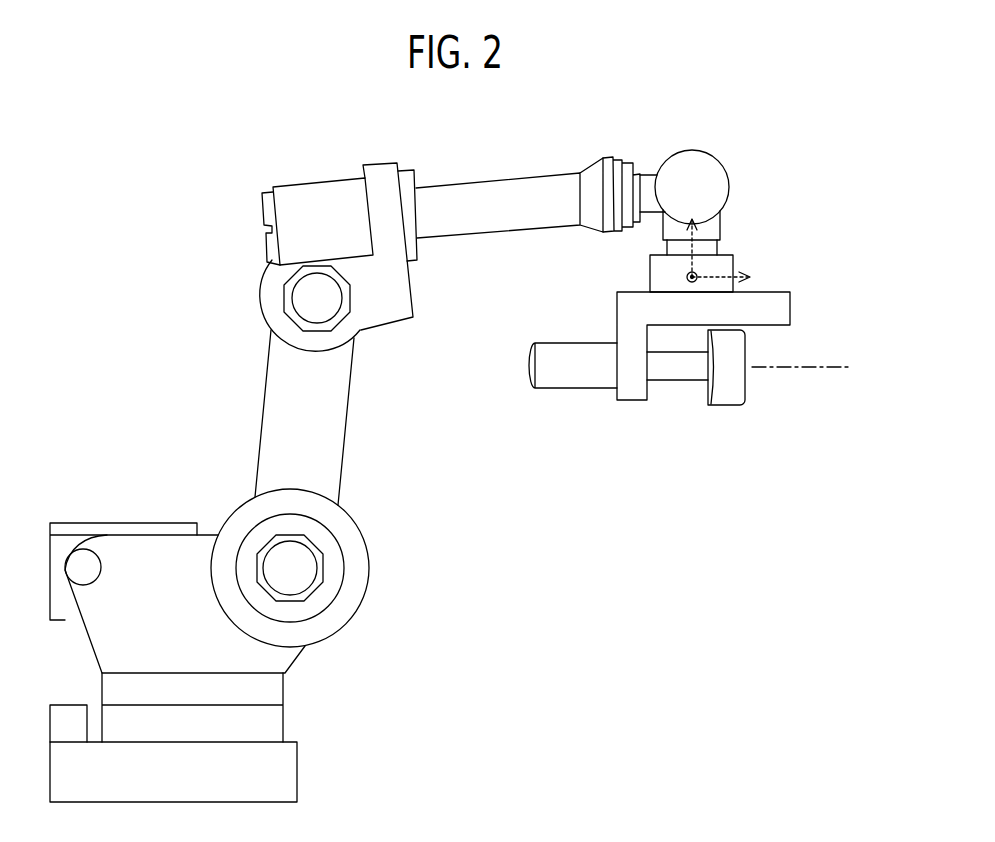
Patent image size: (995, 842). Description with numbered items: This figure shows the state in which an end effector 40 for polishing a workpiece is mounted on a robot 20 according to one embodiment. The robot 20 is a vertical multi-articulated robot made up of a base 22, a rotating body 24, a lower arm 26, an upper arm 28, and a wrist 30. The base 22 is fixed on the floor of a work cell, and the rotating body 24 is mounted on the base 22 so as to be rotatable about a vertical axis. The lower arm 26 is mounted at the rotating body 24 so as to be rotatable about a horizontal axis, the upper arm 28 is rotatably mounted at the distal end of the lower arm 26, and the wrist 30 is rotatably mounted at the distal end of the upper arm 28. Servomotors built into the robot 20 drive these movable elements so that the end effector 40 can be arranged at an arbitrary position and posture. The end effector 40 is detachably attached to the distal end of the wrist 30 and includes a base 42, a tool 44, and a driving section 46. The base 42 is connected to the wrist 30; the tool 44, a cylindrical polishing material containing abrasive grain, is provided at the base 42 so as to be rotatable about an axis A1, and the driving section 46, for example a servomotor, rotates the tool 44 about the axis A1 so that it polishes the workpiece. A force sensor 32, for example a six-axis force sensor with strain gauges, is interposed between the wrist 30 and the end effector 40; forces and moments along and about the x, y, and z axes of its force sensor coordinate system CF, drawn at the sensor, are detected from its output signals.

The robot 20 is at (182, 163).
The base 22 is at (297, 767).
The rotating body 24 is at (164, 617).
The lower arm 26 is at (320, 427).
The upper arm 28 is at (498, 190).
The wrist 30 is at (722, 226).
The force sensor 32 is at (733, 263).
The end effector 40 is at (657, 438).
The base 42 is at (702, 321).
The tool 44 is at (725, 393).
The driving section 46 is at (565, 382).
The axis A1 is at (797, 372).
The force sensor coordinate system CF is at (677, 270).